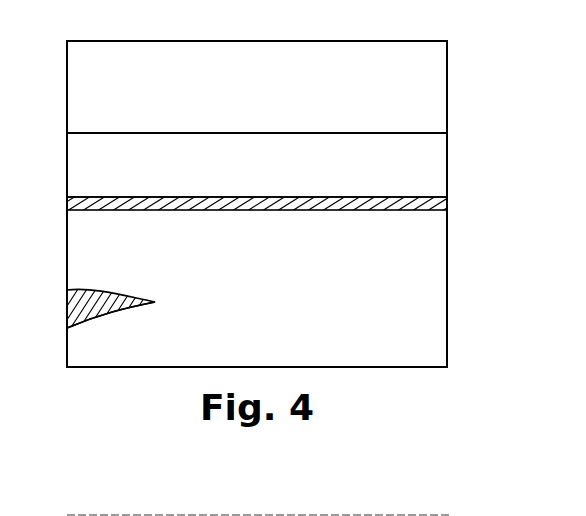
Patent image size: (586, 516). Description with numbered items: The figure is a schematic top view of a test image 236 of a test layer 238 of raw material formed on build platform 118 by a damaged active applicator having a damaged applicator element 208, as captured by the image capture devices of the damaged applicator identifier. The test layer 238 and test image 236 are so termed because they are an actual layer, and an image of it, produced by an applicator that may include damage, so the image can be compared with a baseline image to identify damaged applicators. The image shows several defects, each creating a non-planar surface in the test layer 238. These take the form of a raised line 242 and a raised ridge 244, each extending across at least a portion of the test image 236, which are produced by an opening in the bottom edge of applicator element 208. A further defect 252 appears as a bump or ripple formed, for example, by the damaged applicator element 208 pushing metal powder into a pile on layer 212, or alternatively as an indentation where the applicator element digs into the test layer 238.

The build platform 118 is at (412, 368).
The applicator element 208 is at (475, 70).
The layer 212 is at (292, 328).
The test image 236 is at (500, 288).
The test layer 238 is at (423, 336).
The raised line 242 is at (238, 133).
The raised ridge 244 is at (288, 203).
The defect 252 is at (106, 298).